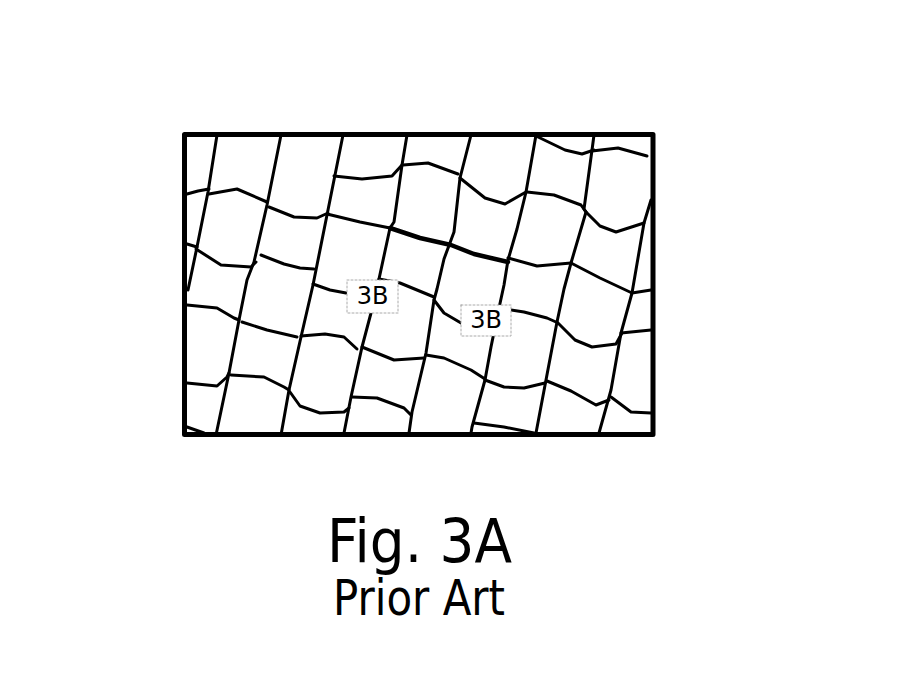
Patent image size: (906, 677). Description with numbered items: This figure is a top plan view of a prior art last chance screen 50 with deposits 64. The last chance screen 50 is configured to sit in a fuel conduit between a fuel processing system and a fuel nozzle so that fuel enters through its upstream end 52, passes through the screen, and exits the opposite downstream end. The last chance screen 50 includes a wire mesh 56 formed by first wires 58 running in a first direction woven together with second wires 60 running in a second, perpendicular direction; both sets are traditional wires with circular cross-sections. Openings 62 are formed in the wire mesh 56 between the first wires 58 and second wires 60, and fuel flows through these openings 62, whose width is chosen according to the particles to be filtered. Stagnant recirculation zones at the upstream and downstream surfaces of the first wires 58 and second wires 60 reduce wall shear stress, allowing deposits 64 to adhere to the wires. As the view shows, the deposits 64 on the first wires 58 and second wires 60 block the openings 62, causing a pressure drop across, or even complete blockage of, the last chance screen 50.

The last chance screen 50 is at (139, 138).
The upstream end 52 is at (246, 165).
The wire mesh 56 is at (222, 234).
The first wires 58 is at (562, 170).
The second wires 60 is at (434, 185).
The openings 62 is at (500, 259).
The deposits 64 is at (270, 356).